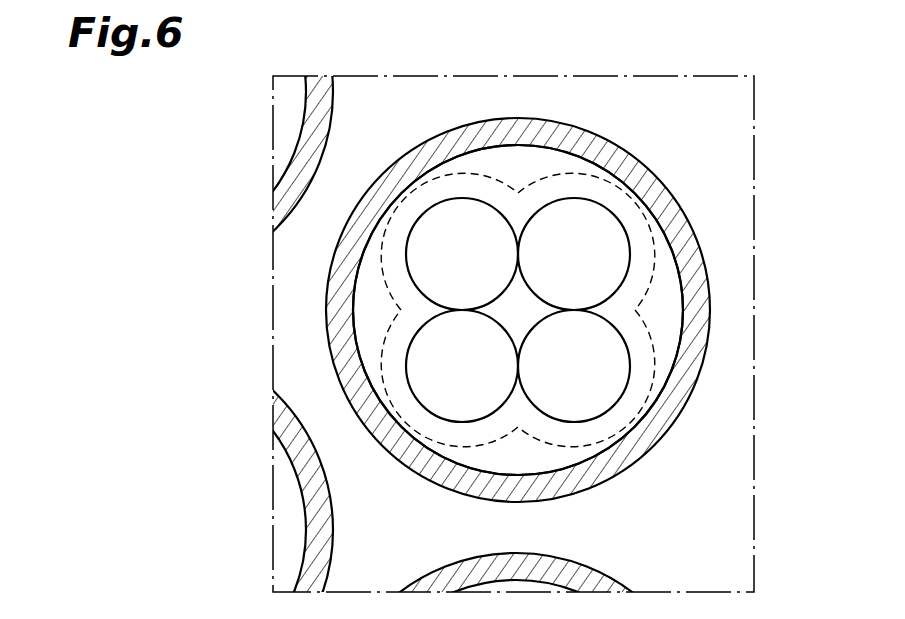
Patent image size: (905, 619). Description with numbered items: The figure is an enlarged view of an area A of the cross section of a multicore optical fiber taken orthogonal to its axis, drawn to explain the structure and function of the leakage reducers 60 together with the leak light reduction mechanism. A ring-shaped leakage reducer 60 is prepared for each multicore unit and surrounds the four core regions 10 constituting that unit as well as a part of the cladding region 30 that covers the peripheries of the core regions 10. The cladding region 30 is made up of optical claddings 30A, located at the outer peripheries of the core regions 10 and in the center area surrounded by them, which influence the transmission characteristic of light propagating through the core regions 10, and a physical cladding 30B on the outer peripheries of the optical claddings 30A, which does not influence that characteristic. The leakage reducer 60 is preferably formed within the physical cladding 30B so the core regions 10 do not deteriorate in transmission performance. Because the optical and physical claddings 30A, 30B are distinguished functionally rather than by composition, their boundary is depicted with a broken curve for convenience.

The core region 10 is at (608, 345).
The cladding region 30 is at (406, 310).
The optical cladding 30A is at (510, 308).
The physical cladding 30B is at (363, 304).
The leakage reducer 60 is at (710, 305).
The area A is at (755, 138).